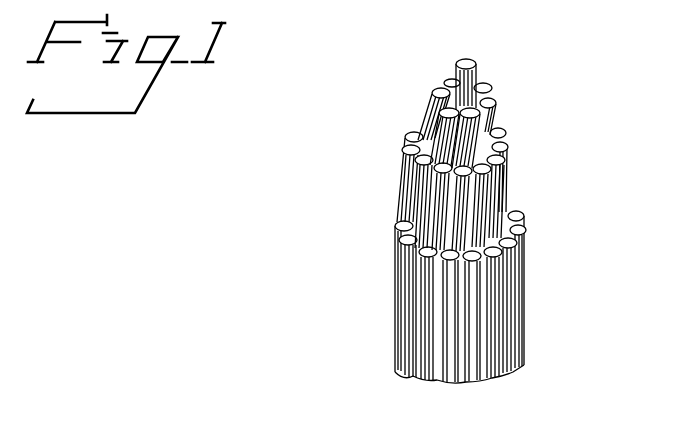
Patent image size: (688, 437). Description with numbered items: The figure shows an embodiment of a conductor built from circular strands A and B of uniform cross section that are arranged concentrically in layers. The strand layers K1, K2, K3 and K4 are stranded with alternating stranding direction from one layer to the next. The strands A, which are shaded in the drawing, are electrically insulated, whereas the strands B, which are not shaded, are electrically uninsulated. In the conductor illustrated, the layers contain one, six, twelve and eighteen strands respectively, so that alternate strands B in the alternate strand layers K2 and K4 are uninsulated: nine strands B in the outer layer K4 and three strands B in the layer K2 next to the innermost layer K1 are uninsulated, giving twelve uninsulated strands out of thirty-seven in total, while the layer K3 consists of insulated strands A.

The strand layer K1 is at (455, 63).
The strand layer K2 is at (497, 93).
The strand layer K3 is at (510, 165).
The strand layer K4 is at (530, 227).
The strand A is at (466, 62).
The strand B is at (447, 122).